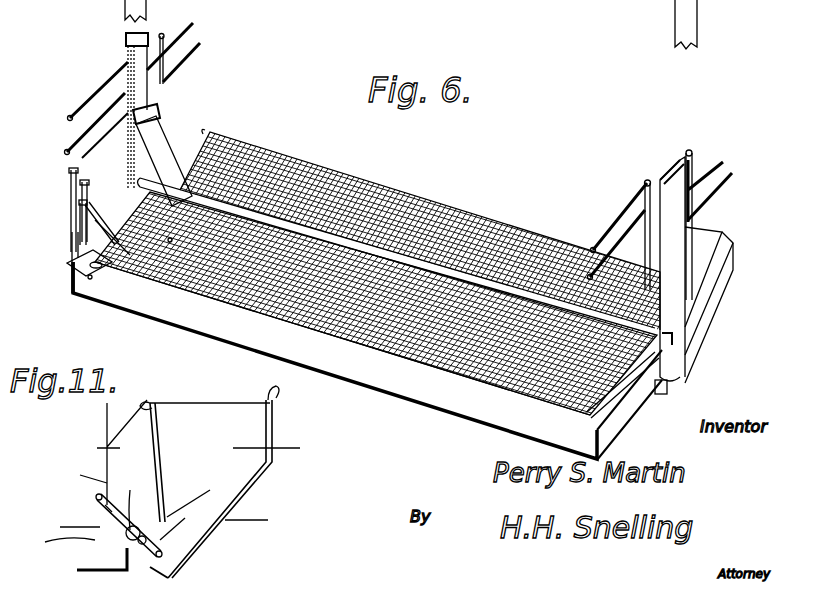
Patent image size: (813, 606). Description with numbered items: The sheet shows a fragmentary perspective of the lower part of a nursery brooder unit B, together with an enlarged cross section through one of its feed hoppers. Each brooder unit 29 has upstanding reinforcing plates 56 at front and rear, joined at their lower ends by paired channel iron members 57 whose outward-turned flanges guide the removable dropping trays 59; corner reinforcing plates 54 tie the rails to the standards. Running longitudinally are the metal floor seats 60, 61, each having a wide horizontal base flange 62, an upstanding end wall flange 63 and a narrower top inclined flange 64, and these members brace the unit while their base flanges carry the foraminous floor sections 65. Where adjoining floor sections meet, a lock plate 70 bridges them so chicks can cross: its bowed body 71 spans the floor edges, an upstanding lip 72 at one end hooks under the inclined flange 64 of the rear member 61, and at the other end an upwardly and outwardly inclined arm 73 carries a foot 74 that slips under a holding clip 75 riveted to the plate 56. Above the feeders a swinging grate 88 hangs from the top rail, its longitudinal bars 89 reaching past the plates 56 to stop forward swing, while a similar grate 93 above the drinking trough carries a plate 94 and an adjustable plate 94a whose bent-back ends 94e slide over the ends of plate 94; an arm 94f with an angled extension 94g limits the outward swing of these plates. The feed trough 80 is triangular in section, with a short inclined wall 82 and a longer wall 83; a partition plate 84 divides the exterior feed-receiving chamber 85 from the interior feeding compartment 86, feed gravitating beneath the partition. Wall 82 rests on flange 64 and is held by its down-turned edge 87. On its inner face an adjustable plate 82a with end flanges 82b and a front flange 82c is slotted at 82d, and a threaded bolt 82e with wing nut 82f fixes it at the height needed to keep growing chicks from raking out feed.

In FIG. 6, the brooder unit 29 is at (555, 222).
In FIG. 6, the nursery brooder units B is at (668, 160).
In FIG. 11, the corner reinforcing plate 54 is at (52, 544).
In FIG. 6, the upstanding reinforcing plate 56 is at (128, 42).
In FIG. 6, the channel iron member 57 is at (668, 390).
In FIG. 6, the dropping tray 59 is at (345, 375).
In FIG. 6, the floor seat 60 is at (86, 270).
In FIG. 6, the floor seat 61 is at (638, 398).
In FIG. 6, the base flange 62 is at (77, 295).
In FIG. 11, the base flange 62 is at (77, 570).
In FIG. 6, the end wall flange 63 is at (80, 264).
In FIG. 6, the inclined flange 64 is at (210, 131).
In FIG. 6, the floor section 65 is at (270, 292).
In FIG. 6, the lock plate 70 is at (300, 215).
In FIG. 6, the body 71 is at (530, 212).
In FIG. 6, the upstanding lip 72 is at (672, 336).
In FIG. 6, the inclined arm 73 is at (165, 152).
In FIG. 6, the foot 74 is at (127, 113).
In FIG. 6, the holding clip 75 is at (150, 110).
In FIG. 11, the feed trough 80 is at (102, 452).
In FIG. 11, the inclined bottom wall 82 is at (178, 568).
In FIG. 11, the adjustable plate 82a is at (100, 505).
In FIG. 11, the end flange 82b is at (187, 526).
In FIG. 11, the front flange 82c is at (105, 505).
In FIG. 11, the slot 82d is at (128, 496).
In FIG. 11, the threaded bolt 82e is at (126, 536).
In FIG. 11, the wing nut 82f is at (195, 492).
In FIG. 11, the inclined bottom wall 83 is at (255, 518).
In FIG. 11, the partition plate 84 is at (162, 447).
In FIG. 11, the chamber 85 is at (279, 438).
In FIG. 11, the compartment 86 is at (73, 468).
In FIG. 11, the downturned edge 87 is at (59, 523).
In FIG. 6, the swinging grate 88 is at (200, 45).
In FIG. 6, the longitudinal bar 89 is at (750, 180).
In FIG. 6, the swinging grate 93 is at (73, 113).
In FIG. 6, the plate 94 is at (70, 175).
In FIG. 6, the plate 94a is at (72, 190).
In FIG. 6, the bent-back end 94e is at (120, 183).
In FIG. 6, the arm 94f is at (165, 237).
In FIG. 6, the angled extension 94g is at (98, 268).